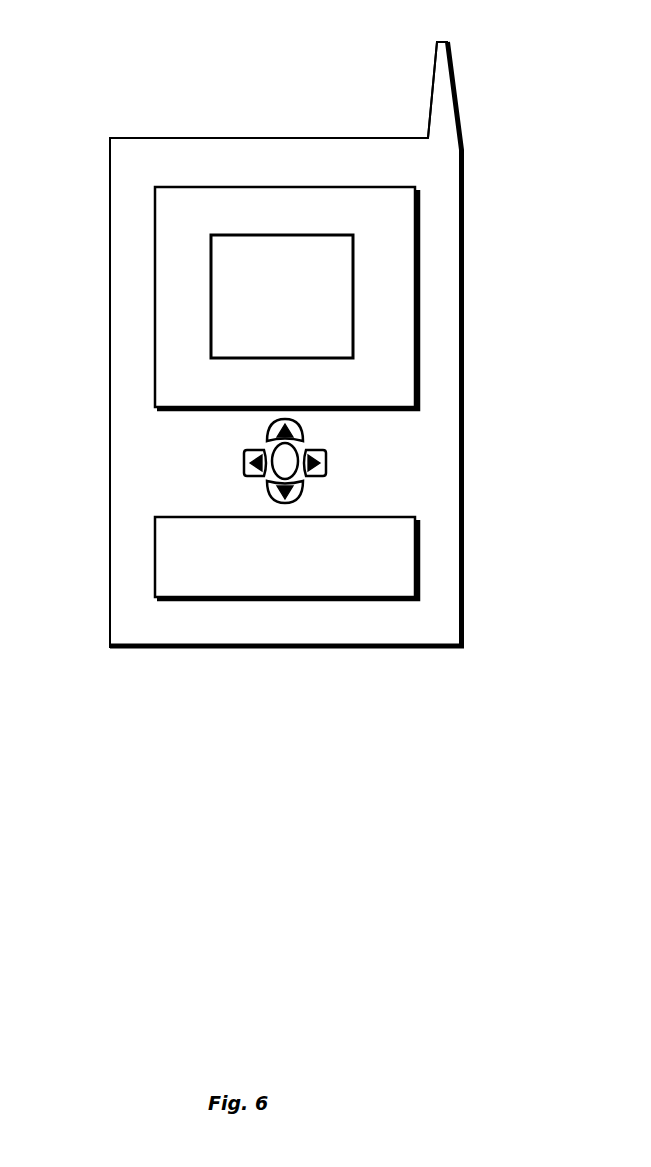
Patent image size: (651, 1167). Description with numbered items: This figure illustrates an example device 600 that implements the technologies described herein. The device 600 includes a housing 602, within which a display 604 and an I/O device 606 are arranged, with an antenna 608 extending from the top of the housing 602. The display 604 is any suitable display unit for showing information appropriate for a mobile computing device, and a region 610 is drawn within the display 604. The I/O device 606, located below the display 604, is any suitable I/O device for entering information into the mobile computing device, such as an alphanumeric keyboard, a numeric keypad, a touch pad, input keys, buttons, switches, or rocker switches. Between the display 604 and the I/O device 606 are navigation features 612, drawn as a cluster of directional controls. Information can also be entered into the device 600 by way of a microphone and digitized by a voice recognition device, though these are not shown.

The device 600 is at (127, 63).
The housing 602 is at (464, 393).
The display 604 is at (418, 212).
The I/O device 606 is at (420, 552).
The antenna 608 is at (432, 85).
The display window 610 is at (358, 313).
The navigation features 612 is at (330, 463).